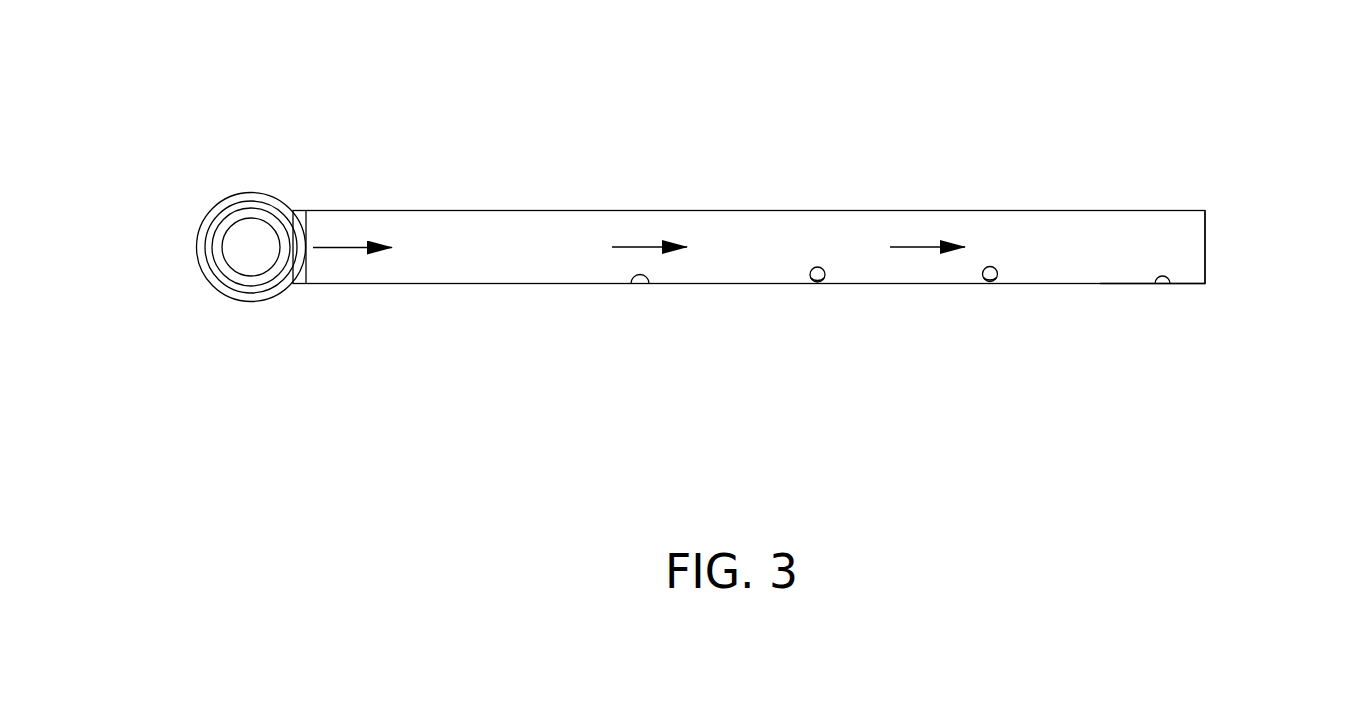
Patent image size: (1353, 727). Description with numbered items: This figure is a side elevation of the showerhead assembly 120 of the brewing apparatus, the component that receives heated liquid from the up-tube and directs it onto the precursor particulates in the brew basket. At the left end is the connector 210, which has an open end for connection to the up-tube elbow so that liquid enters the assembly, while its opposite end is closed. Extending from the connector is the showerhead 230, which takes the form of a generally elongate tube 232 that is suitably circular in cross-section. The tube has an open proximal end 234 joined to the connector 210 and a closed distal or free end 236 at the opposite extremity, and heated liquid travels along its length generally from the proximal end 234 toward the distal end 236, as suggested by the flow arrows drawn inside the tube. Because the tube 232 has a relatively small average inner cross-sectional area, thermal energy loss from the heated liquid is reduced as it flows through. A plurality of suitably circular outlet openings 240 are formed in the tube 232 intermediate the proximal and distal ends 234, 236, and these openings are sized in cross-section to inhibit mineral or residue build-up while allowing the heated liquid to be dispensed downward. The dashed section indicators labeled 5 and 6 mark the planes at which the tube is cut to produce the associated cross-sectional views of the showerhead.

The showerhead assembly 120 is at (211, 89).
The connector 210 is at (207, 251).
The showerhead 230 is at (398, 209).
The elongate tube 232 is at (1198, 210).
The proximal end 234 is at (326, 271).
The distal end 236 is at (1198, 270).
The outlet openings 240 is at (810, 273).
The section line 5- 5 is at (883, 142).
The section line 6- 6 is at (1230, 142).